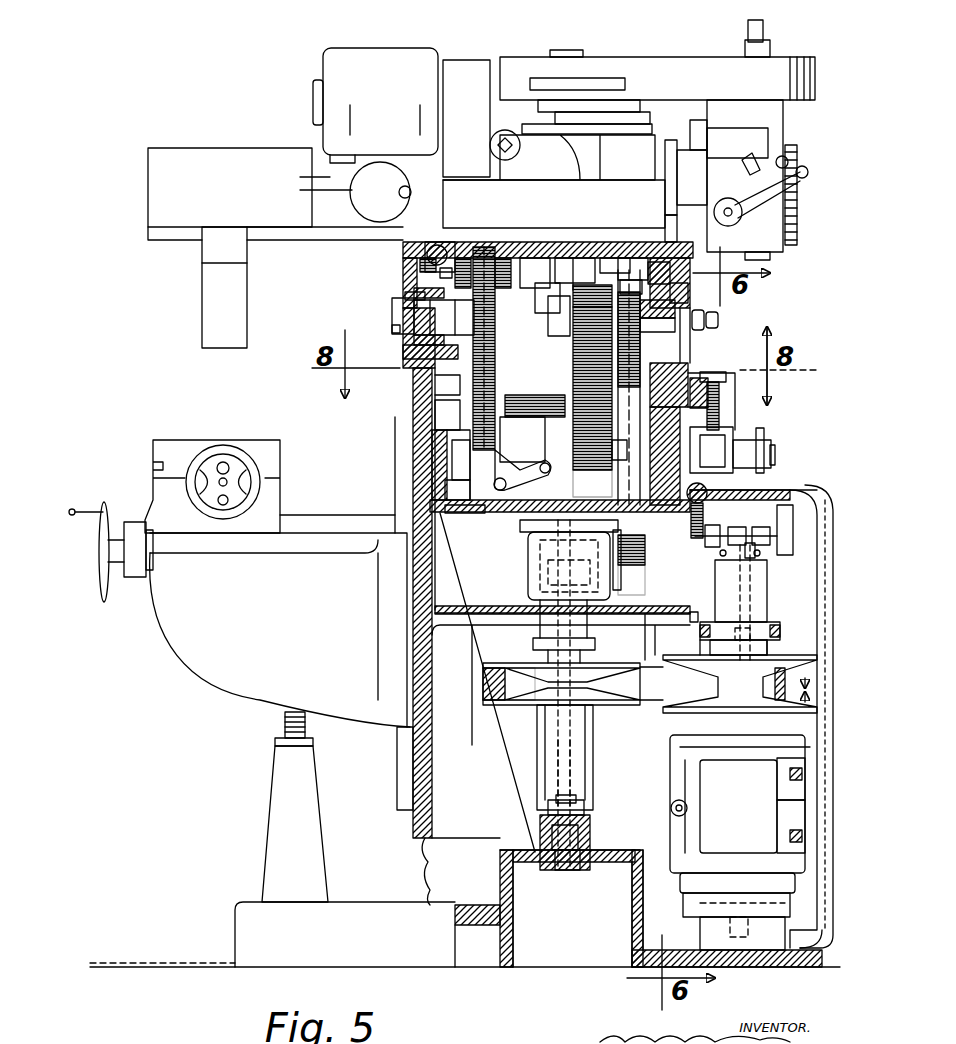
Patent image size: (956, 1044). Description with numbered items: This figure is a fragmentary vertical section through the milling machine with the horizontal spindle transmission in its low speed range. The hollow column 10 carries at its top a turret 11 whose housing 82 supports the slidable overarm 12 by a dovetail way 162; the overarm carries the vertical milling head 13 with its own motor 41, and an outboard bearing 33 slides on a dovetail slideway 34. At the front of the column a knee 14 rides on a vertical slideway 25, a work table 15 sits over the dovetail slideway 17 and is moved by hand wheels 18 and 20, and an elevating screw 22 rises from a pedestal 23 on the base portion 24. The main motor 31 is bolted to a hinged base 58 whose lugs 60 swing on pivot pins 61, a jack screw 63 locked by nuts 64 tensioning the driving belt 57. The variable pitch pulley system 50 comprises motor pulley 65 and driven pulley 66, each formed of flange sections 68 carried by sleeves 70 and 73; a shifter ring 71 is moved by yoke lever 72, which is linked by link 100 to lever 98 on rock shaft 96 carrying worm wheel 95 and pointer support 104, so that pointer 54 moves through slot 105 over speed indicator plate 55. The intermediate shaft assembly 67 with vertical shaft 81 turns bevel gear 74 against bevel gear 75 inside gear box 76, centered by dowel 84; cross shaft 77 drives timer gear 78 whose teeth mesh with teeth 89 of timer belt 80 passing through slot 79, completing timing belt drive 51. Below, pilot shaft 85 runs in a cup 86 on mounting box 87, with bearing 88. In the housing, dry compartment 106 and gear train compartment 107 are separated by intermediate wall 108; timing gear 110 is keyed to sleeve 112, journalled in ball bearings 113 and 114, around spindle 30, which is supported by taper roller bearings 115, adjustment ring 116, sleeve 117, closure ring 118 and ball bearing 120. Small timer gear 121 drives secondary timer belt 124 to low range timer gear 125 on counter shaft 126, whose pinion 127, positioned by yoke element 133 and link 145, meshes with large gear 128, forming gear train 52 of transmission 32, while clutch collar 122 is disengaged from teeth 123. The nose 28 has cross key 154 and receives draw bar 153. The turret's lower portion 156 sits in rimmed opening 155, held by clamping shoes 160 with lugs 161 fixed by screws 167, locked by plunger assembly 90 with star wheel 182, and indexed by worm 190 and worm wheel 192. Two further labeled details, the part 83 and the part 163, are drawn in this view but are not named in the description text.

The column 10 is at (418, 858).
The turret 11 is at (408, 394).
The overarm 12 is at (160, 163).
The vertical milling head 13 is at (792, 135).
The knee 14 is at (210, 655).
The work table 15 is at (178, 440).
The dovetail slideway 17 is at (294, 545).
The hand wheel 18 is at (206, 505).
The hand wheel 20 is at (103, 556).
The vertical elevating screw 22 is at (285, 722).
The pedestal 23 is at (278, 840).
The base portion 24 is at (240, 902).
The vertical slideway 25 is at (397, 785).
The nose 28 is at (392, 312).
The horizontal spindle 30 is at (405, 298).
The main motor 31 is at (802, 740).
The transmission 32 is at (428, 440).
The outboard bearing 33 is at (210, 301).
The dovetail slideway 34 is at (296, 241).
The motor 41 is at (378, 55).
The variable pitch pulley system 50 is at (520, 712).
The timing belt drive 51 is at (626, 447).
The gear train 52 is at (460, 512).
The pointer 54 is at (777, 490).
The speed indicator plate 55 is at (818, 490).
The driving belt 57 is at (655, 703).
The hinged base 58 is at (676, 868).
The lugs 60 is at (805, 750).
The pivot pins 61 is at (805, 778).
The jack screw 63 is at (689, 808).
The nuts 64 is at (703, 800).
The motor pulley 65 is at (688, 648).
The driven pulley 66 is at (516, 662).
The intermediate shaft assembly 67 is at (535, 772).
The flange sections 68 is at (770, 657).
The sleeves 70 is at (767, 590).
The shifter ring 71 is at (722, 628).
The yoke lever 72 is at (696, 612).
The shiftable sleeves 73 is at (545, 724).
The bevel gear 74 is at (528, 585).
The bevel gear 75 is at (575, 555).
The gear box 76 is at (528, 548).
The cross shaft 77 is at (645, 580).
The timer gear 78 is at (645, 550).
The slot 79 is at (646, 505).
The timer belt 80 is at (632, 470).
The vertical shaft 81 is at (586, 765).
The turret housing 82 is at (668, 242).
The inner wall 83 is at (486, 682).
The dowel 84 is at (555, 490).
The pilot shaft 85 is at (565, 870).
The cup 86 is at (588, 845).
The mounting box 87 is at (512, 842).
The bearing 88 is at (582, 810).
The teeth 89 is at (615, 403).
The plunger assembly 90 is at (742, 432).
The worm wheel 95 is at (640, 565).
The rock shaft 96 is at (738, 527).
The lever 98 is at (740, 548).
The link 100 is at (758, 548).
The pointer support 104 is at (794, 528).
The slot 105 is at (830, 497).
The dry compartment 106 is at (582, 258).
The gear train compartment 107 is at (530, 245).
The intermediate wall 108 is at (573, 258).
The timing gear 110 is at (631, 260).
The sleeve 112 is at (652, 300).
The ball bearing 113 is at (672, 276).
The ball bearing 114 is at (582, 290).
The taper roller bearings 115 is at (413, 292).
The adjustment ring 116 is at (473, 242).
The sleeve 117 is at (428, 255).
The closure ring 118 is at (410, 353).
The ball bearing 120 is at (686, 291).
The small timer gear 121 is at (588, 300).
The clutch collar 122 is at (540, 310).
The teeth 123 is at (536, 295).
The secondary timer belt 124 is at (615, 258).
The low range timer gear 125 is at (622, 460).
The counter shaft 126 is at (538, 405).
The pinion 127 is at (440, 455).
The large gear 128 is at (490, 242).
The yoke element 133 is at (497, 480).
The link 145 is at (500, 380).
The draw bar 153 is at (704, 330).
The cross key 154 is at (392, 327).
The circular rimmed opening 155 is at (432, 430).
The lower portion 156 is at (445, 470).
The clamping shoes 160 is at (730, 385).
The lug 161 is at (700, 378).
The dovetail way 162 is at (428, 242).
The pin 163 is at (455, 242).
The screws 167 is at (720, 392).
The star wheel 182 is at (775, 442).
The worm 190 is at (706, 494).
The worm wheel 192 is at (440, 492).